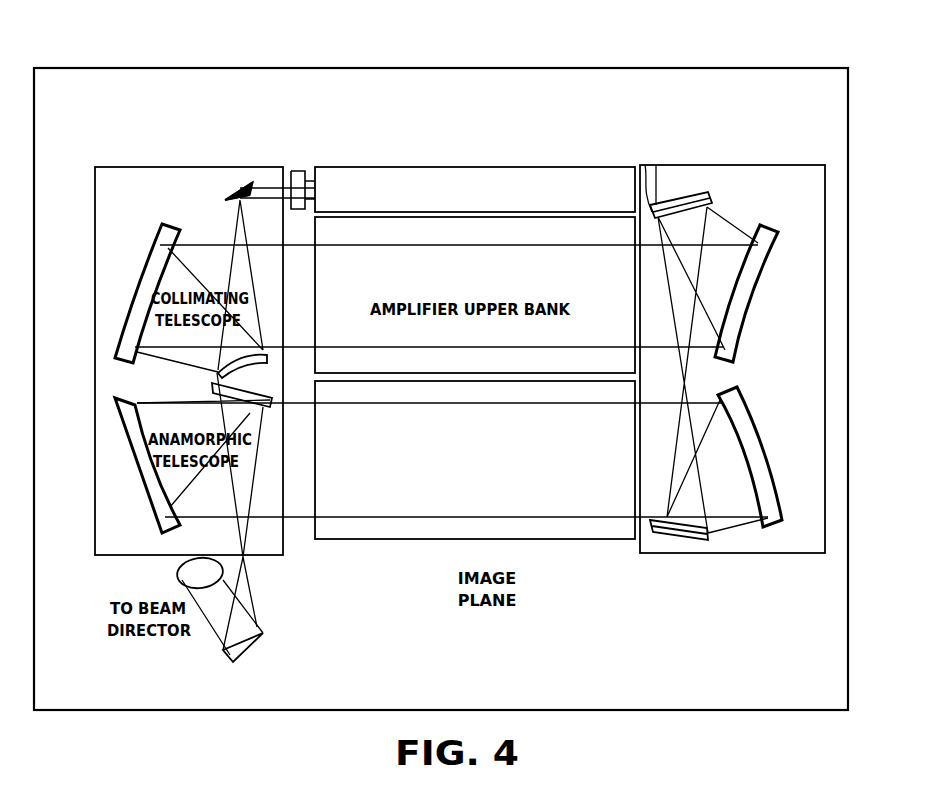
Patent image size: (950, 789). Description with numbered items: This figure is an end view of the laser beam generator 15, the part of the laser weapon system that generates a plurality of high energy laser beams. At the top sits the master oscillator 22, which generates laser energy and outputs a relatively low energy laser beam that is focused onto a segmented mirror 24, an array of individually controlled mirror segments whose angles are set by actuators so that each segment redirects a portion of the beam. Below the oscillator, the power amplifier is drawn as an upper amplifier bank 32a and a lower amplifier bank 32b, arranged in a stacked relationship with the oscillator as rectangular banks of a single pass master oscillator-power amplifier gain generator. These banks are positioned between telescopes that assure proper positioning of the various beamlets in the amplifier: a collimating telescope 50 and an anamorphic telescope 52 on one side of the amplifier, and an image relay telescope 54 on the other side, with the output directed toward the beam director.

The laser beam generator 15 is at (503, 68).
The master oscillator 22 is at (513, 167).
The segmented mirror 24 is at (238, 186).
The upper amplifier bank 32a is at (303, 170).
The lower amplifier bank 32b is at (370, 539).
The collimating telescope 50 is at (148, 272).
The anamorphic telescope 52 is at (140, 470).
The image relay telescope 54 is at (820, 346).